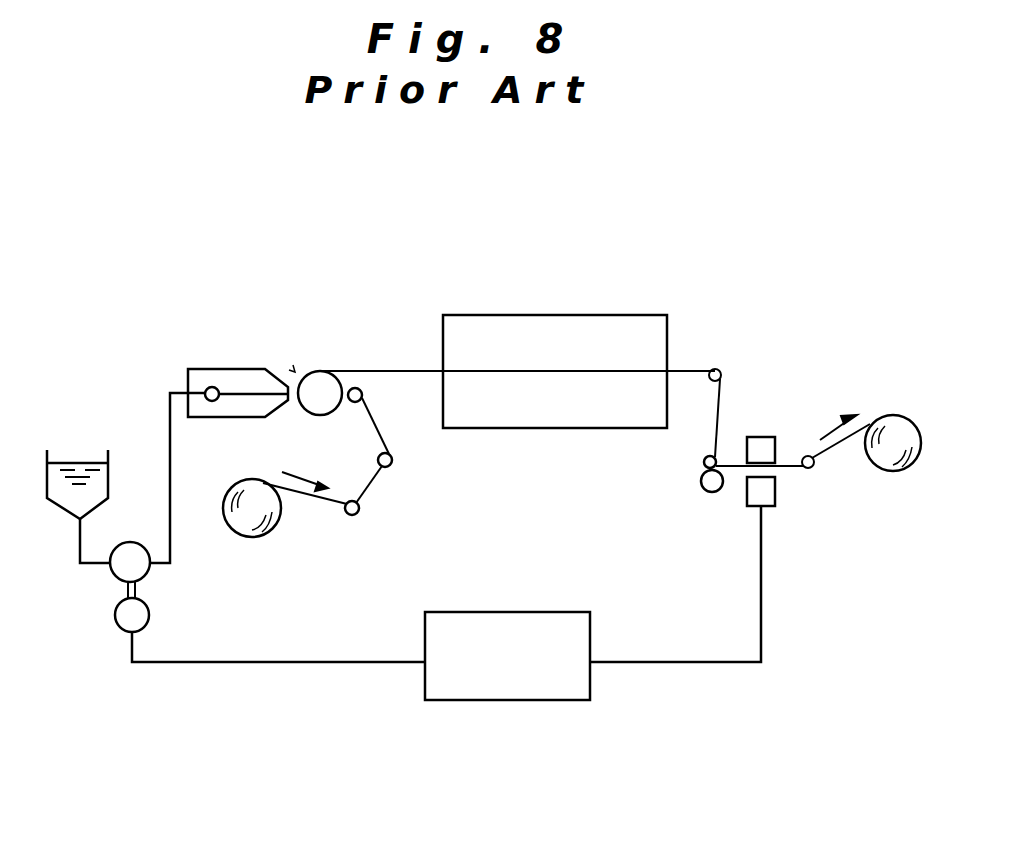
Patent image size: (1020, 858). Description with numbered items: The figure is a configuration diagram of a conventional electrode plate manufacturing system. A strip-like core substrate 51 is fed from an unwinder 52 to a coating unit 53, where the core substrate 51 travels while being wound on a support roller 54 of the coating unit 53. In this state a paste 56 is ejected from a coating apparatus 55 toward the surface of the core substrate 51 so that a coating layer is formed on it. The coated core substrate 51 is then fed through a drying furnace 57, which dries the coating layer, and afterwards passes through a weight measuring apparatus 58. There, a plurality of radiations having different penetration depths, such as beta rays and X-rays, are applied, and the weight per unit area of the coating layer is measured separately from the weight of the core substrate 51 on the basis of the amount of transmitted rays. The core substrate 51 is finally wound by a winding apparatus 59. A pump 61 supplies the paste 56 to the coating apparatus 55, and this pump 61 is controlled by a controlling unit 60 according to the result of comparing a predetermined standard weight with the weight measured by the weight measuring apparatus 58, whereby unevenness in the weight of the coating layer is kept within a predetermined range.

The core substrate 51 is at (390, 470).
The unwinder 52 is at (255, 525).
The coating unit 53 is at (289, 370).
The support roller 54 is at (321, 388).
The coating apparatus 55 is at (228, 382).
The paste 56 is at (73, 463).
The drying furnace 57 is at (562, 418).
The weight measuring apparatus 58 is at (750, 492).
The winding apparatus 59 is at (890, 470).
The controlling unit 60 is at (505, 700).
The pump 61 is at (121, 578).